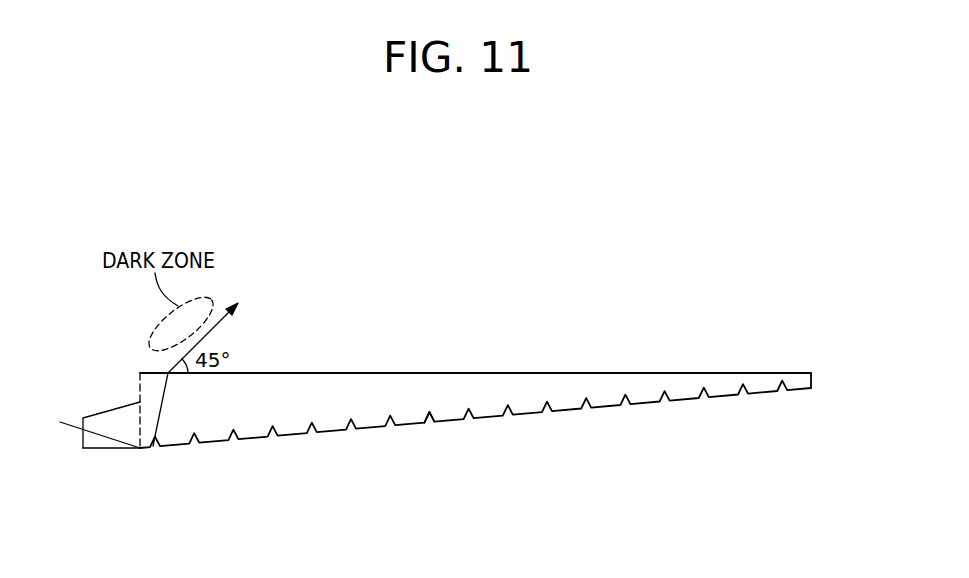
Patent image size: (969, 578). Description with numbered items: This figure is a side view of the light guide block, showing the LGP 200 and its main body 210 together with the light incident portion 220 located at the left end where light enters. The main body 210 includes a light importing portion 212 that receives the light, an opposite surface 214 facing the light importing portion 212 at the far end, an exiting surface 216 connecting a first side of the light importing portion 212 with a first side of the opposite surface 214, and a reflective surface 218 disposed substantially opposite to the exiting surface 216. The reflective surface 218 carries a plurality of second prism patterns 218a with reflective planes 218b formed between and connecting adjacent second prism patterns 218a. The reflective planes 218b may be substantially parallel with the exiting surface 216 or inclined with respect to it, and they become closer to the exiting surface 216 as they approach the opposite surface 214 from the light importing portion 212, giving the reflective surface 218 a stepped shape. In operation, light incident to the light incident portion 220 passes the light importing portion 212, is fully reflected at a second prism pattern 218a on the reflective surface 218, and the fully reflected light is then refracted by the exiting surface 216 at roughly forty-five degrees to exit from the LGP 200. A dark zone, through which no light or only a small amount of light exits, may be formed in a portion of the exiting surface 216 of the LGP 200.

The LGP 200 is at (118, 323).
The light incident portion 220 is at (110, 403).
The main body 210 is at (140, 387).
The light importing portion 212 is at (140, 428).
The opposite surface 214 is at (811, 388).
The exiting surface 216 is at (438, 372).
The reflective surface 218 is at (480, 506).
The second prism pattern 218a is at (433, 423).
The reflective plane 218b is at (405, 427).